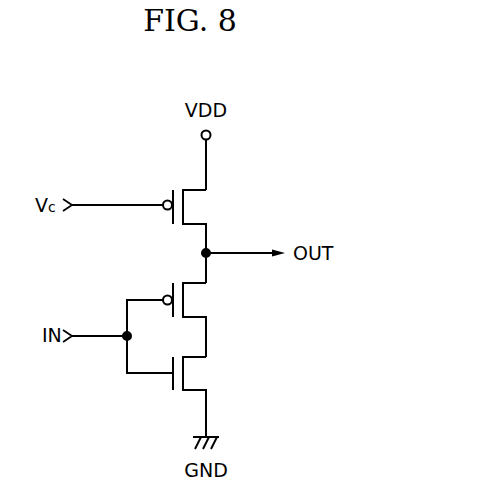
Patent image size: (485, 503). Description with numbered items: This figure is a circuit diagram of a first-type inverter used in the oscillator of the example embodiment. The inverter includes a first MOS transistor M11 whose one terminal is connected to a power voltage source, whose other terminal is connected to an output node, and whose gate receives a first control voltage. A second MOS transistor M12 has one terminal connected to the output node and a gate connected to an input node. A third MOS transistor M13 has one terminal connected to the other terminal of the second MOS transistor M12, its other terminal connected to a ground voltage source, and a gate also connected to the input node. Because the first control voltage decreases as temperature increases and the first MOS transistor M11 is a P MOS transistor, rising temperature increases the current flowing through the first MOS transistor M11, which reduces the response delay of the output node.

The first MOS transistor M11 is at (208, 221).
The second MOS transistor M12 is at (190, 319).
The third MOS transistor M13 is at (190, 386).